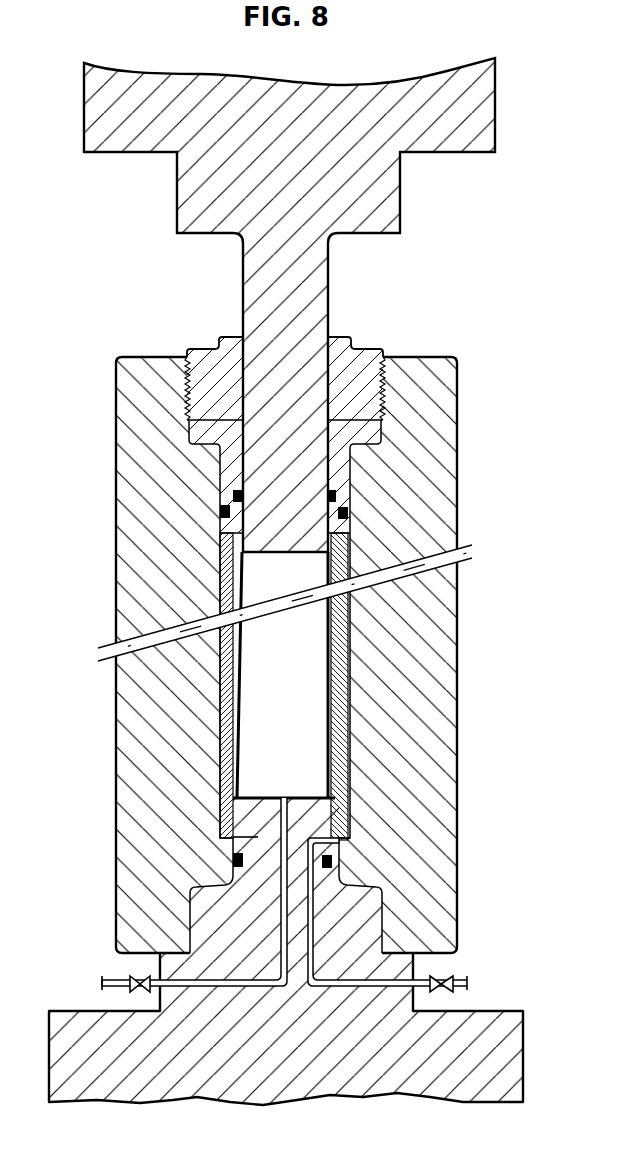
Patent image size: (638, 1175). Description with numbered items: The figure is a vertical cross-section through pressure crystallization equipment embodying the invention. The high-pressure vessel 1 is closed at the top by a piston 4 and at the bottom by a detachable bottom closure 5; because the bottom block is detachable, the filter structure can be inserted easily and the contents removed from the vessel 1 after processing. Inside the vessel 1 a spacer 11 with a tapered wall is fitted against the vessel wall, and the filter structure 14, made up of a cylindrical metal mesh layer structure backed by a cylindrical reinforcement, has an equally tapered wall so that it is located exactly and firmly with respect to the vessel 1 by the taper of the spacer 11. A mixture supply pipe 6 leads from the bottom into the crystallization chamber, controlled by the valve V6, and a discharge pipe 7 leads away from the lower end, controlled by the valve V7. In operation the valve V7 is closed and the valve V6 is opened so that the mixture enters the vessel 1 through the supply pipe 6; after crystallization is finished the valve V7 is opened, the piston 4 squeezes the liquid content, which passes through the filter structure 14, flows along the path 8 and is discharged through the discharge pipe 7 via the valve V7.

The vessel 1 is at (447, 446).
The piston 4 is at (315, 295).
The bottom closure 5 is at (198, 922).
The mixture supply pipe 6 is at (230, 983).
The discharge pipe 7 is at (363, 983).
The path 8 is at (350, 817).
The spacer 11 is at (347, 642).
The filter structure 14 is at (333, 703).
The valve V6 is at (130, 979).
The valve V7 is at (444, 977).